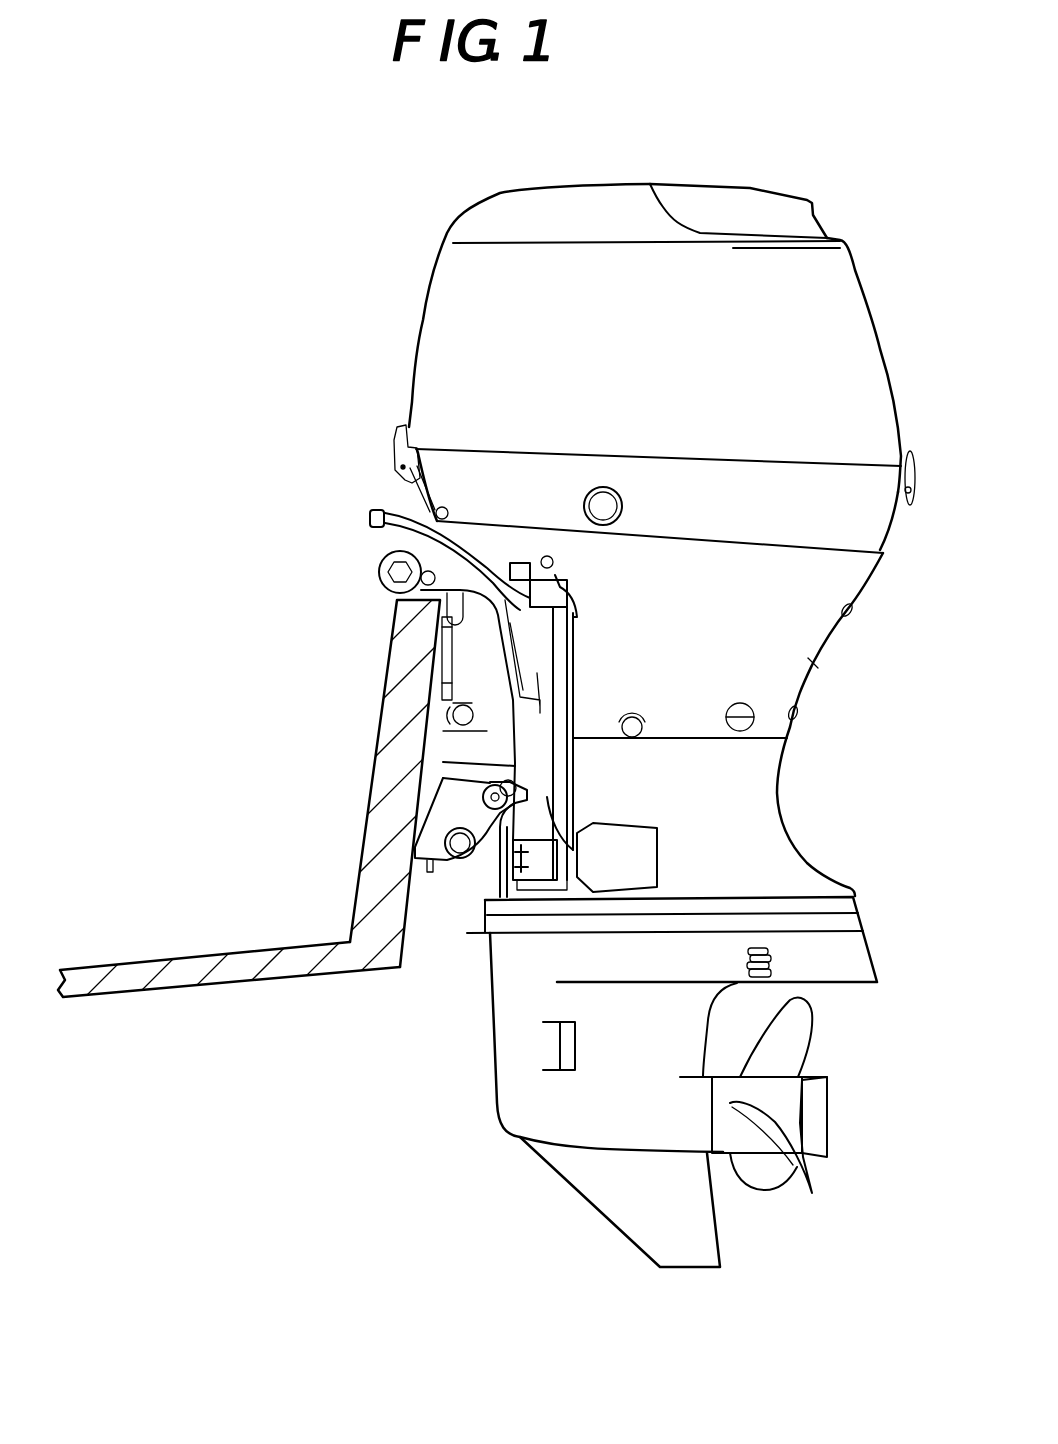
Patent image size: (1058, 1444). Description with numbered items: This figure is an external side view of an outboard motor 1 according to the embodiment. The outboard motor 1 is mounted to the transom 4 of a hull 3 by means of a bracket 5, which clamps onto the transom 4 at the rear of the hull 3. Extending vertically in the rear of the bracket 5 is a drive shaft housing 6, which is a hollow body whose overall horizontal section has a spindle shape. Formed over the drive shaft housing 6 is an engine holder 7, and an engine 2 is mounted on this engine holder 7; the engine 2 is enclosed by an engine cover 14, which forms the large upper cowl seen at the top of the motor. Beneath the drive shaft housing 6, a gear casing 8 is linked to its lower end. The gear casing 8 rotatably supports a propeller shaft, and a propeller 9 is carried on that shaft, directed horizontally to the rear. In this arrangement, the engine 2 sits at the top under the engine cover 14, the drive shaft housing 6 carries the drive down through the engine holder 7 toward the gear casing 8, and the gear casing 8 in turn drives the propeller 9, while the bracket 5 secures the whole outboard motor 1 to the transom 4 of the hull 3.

The outboard motor 1 is at (368, 322).
The engine 2 is at (430, 300).
The hull 3 is at (193, 963).
The transom 4 is at (390, 720).
The bracket 5 is at (478, 668).
The drive shaft housing 6 is at (800, 672).
The engine holder 7 is at (830, 537).
The gear casing 8 is at (515, 1043).
The propeller 9 is at (795, 1035).
The engine cover 14 is at (878, 372).